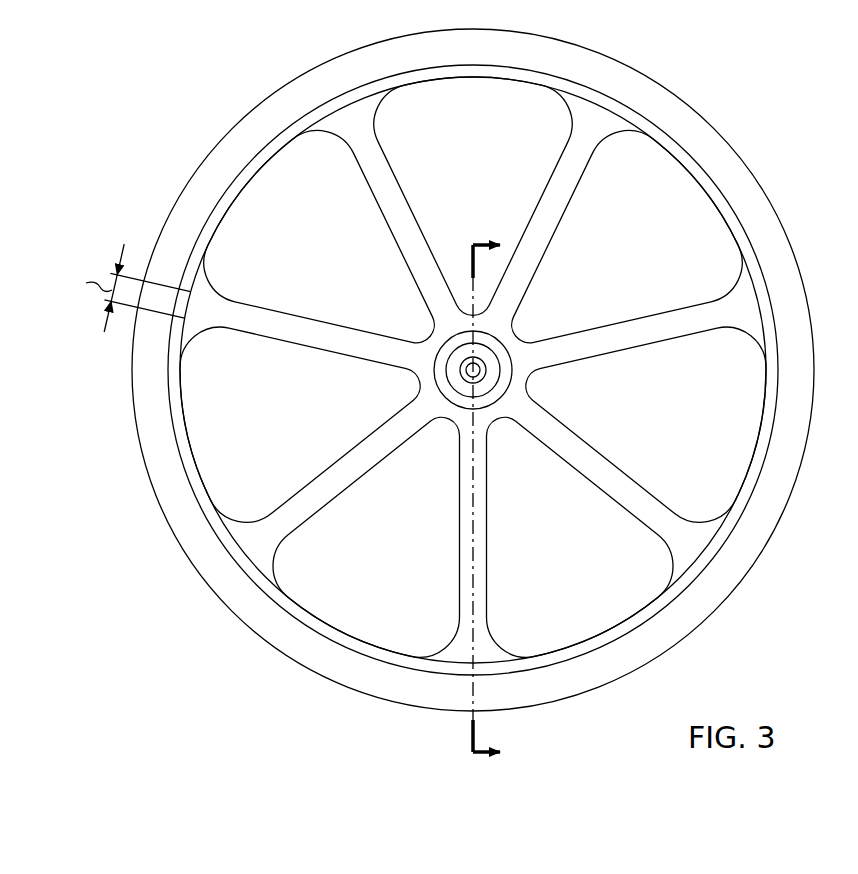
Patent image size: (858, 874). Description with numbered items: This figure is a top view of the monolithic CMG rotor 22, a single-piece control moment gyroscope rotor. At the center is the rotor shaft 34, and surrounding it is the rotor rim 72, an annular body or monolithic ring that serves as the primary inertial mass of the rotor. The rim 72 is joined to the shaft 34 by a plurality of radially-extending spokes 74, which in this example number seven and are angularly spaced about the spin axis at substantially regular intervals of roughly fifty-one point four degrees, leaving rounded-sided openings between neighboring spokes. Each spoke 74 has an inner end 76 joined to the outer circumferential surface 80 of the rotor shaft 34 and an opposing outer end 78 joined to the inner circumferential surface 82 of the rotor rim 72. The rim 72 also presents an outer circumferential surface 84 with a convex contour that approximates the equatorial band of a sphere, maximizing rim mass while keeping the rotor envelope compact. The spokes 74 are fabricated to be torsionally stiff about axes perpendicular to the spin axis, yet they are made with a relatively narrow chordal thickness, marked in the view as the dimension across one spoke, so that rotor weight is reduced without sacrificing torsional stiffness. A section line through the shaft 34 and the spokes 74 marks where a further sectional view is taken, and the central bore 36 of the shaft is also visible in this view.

The monolithic CMG rotor 22 is at (112, 87).
The rotor shaft 34 is at (520, 352).
The axle bore 36 is at (454, 373).
The rotor rim 72 is at (504, 370).
The radially-extending spoke 74 is at (304, 306).
The inner end 76 is at (440, 303).
The outer end 78 is at (373, 118).
The outer circumferential surface 80 is at (244, 189).
The inner circumferential surface 82 is at (183, 440).
The outer circumferential surface 84 is at (143, 440).